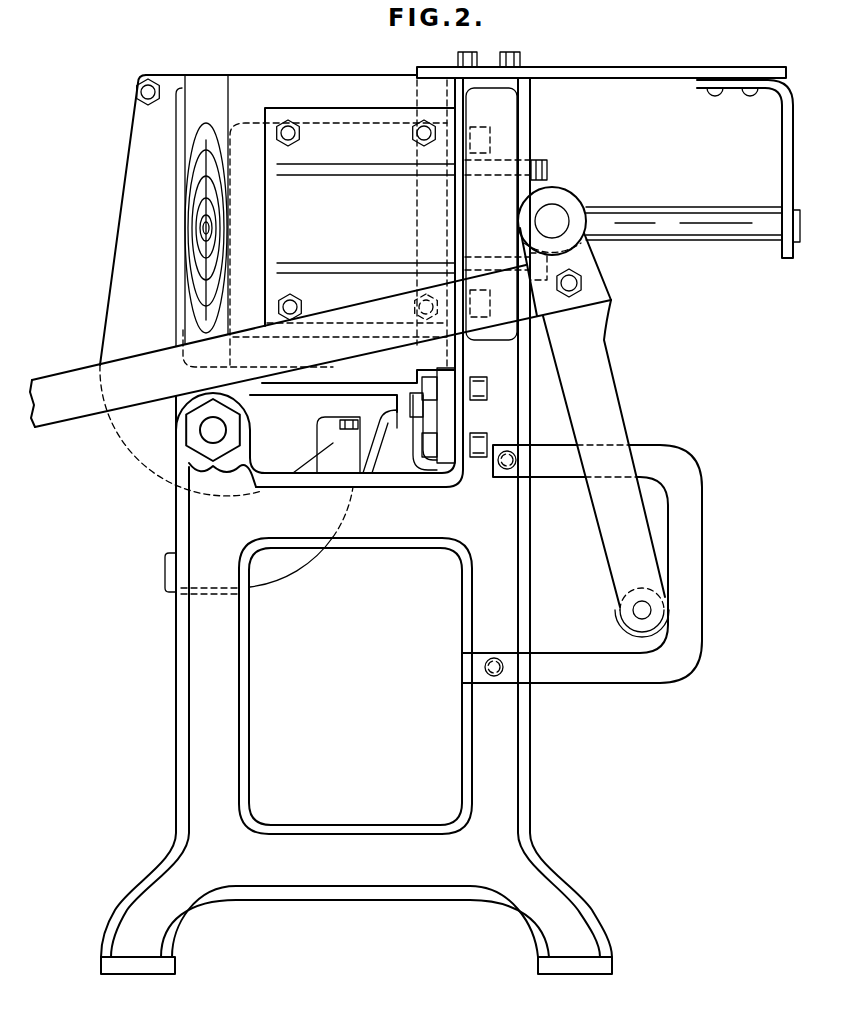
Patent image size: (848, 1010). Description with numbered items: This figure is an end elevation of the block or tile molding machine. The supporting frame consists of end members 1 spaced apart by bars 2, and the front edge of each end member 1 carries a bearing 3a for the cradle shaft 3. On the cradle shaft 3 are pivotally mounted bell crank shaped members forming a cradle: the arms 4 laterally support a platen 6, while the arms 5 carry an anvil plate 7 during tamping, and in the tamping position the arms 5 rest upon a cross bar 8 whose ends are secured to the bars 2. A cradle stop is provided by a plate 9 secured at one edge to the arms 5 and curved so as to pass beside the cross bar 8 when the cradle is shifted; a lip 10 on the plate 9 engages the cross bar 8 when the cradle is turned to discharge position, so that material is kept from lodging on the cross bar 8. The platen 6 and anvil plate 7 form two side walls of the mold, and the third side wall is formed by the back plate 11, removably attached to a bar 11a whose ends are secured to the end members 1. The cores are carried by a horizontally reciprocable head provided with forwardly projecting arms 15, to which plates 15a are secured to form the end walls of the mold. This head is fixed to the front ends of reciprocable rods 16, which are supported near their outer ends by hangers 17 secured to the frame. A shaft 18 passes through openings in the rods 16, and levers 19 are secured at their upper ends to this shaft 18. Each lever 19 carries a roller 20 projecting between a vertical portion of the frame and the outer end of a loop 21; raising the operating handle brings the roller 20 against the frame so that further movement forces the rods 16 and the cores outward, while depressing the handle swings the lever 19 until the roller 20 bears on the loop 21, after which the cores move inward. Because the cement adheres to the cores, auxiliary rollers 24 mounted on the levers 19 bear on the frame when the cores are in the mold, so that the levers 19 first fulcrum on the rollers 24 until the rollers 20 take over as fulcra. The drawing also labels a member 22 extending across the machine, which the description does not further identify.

The end member 1 is at (190, 648).
The bar 2 is at (417, 522).
The cradle shaft 3 is at (200, 437).
The bearing 3a is at (180, 414).
The arm 4 is at (118, 282).
The arm 5 is at (288, 437).
The platen 6 is at (205, 230).
The anvil plate 7 is at (398, 412).
The cross bar 8 is at (347, 453).
The plate 9 is at (277, 587).
The lip 10 is at (166, 566).
The back plate 11 is at (397, 80).
The bar 11a is at (445, 423).
The arm 15 is at (344, 223).
The plate 15a is at (360, 61).
The rod 16 is at (667, 212).
The hanger 17 is at (787, 142).
The shaft 18 is at (556, 218).
The lever 19 is at (600, 362).
The roller 20 is at (636, 624).
The loop 21 is at (592, 677).
The belt 22 is at (72, 362).
The roller 24 is at (612, 278).